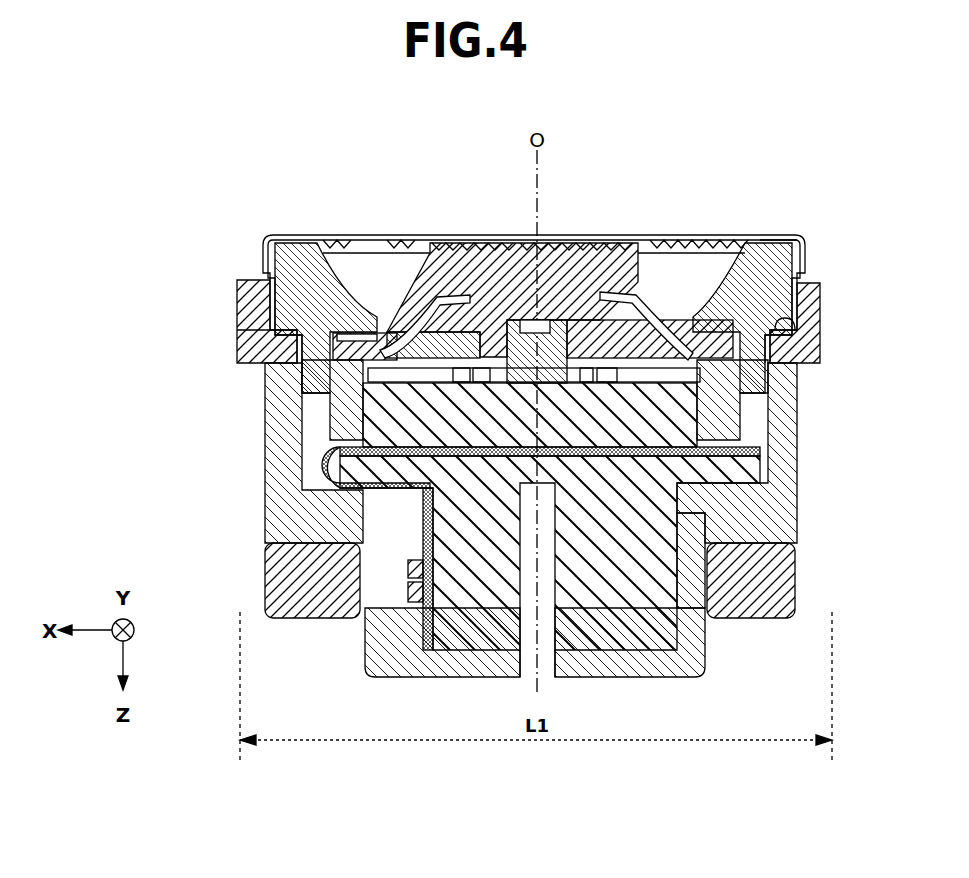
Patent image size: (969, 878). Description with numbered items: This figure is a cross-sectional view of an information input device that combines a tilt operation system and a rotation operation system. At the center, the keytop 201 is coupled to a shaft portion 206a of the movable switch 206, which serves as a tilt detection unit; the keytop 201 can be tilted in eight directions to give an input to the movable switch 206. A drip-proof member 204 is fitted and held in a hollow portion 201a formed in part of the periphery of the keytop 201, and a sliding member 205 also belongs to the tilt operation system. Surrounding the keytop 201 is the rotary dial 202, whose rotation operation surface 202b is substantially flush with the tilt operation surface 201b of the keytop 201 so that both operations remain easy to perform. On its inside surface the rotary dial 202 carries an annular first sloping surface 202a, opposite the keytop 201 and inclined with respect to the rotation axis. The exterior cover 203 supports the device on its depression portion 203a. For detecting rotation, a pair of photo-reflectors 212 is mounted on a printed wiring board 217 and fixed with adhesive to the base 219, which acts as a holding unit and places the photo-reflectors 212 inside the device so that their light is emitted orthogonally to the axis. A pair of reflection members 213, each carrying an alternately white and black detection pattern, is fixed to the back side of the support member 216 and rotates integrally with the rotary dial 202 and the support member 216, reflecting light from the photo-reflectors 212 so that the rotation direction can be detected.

The keytop 201 is at (552, 243).
The hollow portion 201a is at (433, 245).
The tilt operation surface 201b is at (500, 245).
The rotary dial 202 is at (806, 258).
The first sloping surface 202a is at (720, 247).
The rotation operation surface 202b is at (772, 240).
The exterior cover 203 is at (253, 280).
The depression portion 203a is at (250, 340).
The drip-proof member 204 is at (347, 333).
The sliding member 205 is at (282, 240).
The movable switch 206 is at (573, 420).
The shaft portion 206a is at (695, 318).
The photo-reflector 212 is at (410, 593).
The reflection member 213 is at (785, 568).
The support member 216 is at (798, 436).
The printed wiring board 217 is at (320, 468).
The base 219 is at (640, 658).